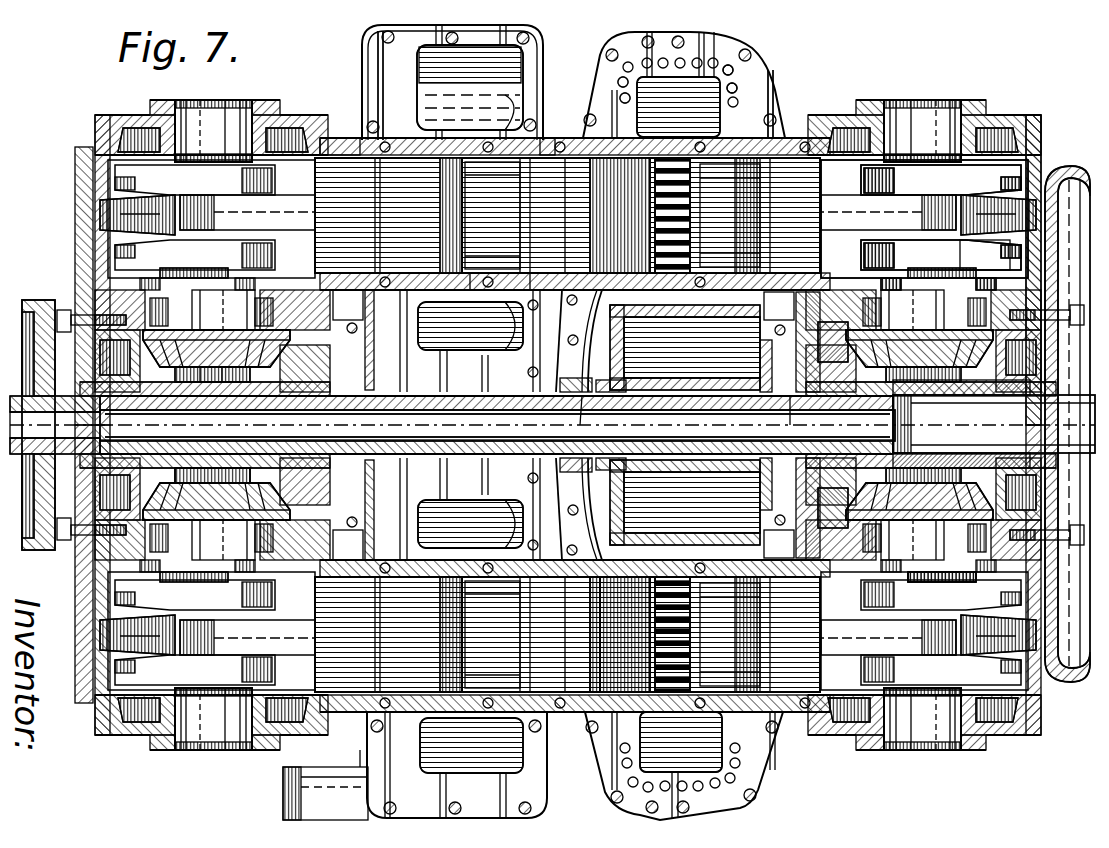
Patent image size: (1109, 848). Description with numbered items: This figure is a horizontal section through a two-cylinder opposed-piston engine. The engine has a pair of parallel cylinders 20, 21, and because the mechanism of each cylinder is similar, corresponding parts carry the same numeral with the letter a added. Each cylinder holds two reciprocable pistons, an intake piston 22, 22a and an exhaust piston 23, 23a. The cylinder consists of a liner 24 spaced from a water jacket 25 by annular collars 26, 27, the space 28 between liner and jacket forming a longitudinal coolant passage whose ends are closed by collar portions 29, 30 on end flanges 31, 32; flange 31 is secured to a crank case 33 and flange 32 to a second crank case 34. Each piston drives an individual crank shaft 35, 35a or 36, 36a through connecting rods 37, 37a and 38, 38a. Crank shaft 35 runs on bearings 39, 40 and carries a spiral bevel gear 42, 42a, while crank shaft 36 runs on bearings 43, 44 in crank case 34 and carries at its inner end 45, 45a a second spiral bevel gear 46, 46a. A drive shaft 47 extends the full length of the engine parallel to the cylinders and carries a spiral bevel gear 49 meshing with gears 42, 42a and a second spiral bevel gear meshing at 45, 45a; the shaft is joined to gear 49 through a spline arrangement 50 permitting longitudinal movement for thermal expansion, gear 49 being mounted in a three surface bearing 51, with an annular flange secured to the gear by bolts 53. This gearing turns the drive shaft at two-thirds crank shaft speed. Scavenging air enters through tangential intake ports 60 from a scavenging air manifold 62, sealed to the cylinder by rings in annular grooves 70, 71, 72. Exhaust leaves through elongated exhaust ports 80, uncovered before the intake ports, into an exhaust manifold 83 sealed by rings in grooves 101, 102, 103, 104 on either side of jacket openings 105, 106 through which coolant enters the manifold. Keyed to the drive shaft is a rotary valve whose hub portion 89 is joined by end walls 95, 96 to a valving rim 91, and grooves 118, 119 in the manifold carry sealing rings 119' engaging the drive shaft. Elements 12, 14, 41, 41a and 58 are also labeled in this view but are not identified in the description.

The input flange 12 is at (22, 322).
The main shaft 14 is at (764, 102).
The cylinder 20 is at (572, 119).
The cylinder 21 is at (575, 724).
The intake piston 22 is at (356, 228).
The intake piston 22a is at (466, 648).
The exhaust piston 23 is at (790, 236).
The exhaust piston 23a is at (652, 636).
The liner 24 is at (490, 270).
The water jacket 25 is at (568, 305).
The annular collar 26 is at (500, 290).
The annular collar 27 is at (700, 300).
The coolant passage 28 is at (520, 292).
The collar portion 29 is at (348, 311).
The collar portion 30 is at (762, 100).
The end flange 31 is at (343, 134).
The end flange 32 is at (808, 116).
The crank case 33 is at (85, 127).
The second crank case 34 is at (1050, 103).
The crank shaft 35 is at (150, 180).
The crank shaft 35a is at (190, 660).
The crank shaft 36 is at (1028, 172).
The crank shaft 36a is at (970, 662).
The connecting rod 37 is at (296, 196).
The connecting rod 37a is at (330, 665).
The connecting rod 38 is at (841, 210).
The connecting rod 38a is at (918, 625).
The bearing 39 is at (185, 100).
The bearing 40 is at (198, 268).
The bevel gear hub 41 is at (193, 380).
The lower bevel gear hub 41a is at (246, 480).
The spiral bevel gear 42 is at (166, 368).
The spiral bevel gear 42a is at (203, 484).
The bearing 43 is at (950, 98).
The bearing 44 is at (985, 262).
The inner end of crank shaft 45 is at (958, 372).
The inner end of crank shaft 45a is at (950, 468).
The second spiral bevel gear 46 is at (904, 268).
The second spiral bevel gear 46a is at (960, 478).
The drive shaft 47 is at (416, 400).
The spiral bevel gear 49 is at (1046, 460).
The spline arrangement 50 is at (250, 378).
The three surface bearing 51 is at (812, 336).
The bolts 53 is at (1062, 540).
The support post 58 is at (374, 295).
The scavenging air intake ports 60 is at (455, 205).
The scavenging air manifold 62 is at (368, 45).
The annular groove 70 is at (372, 122).
The annular groove 71 is at (422, 124).
The annular groove 72 is at (549, 137).
The exhaust ports 80 is at (665, 235).
The exhaust manifold 83 is at (746, 45).
The hub portion 89 is at (638, 418).
The valving rim 91 is at (615, 522).
The end wall 95 is at (576, 474).
The end wall 96 is at (705, 432).
The annular groove 101 is at (619, 85).
The annular groove 102 is at (626, 104).
The annular groove 103 is at (735, 67).
The annular groove 104 is at (738, 86).
The openings 105 is at (610, 180).
The openings 106 is at (748, 155).
The annular groove 118 is at (578, 377).
The annular groove 119 is at (552, 427).
The sealing rings 119' is at (688, 420).